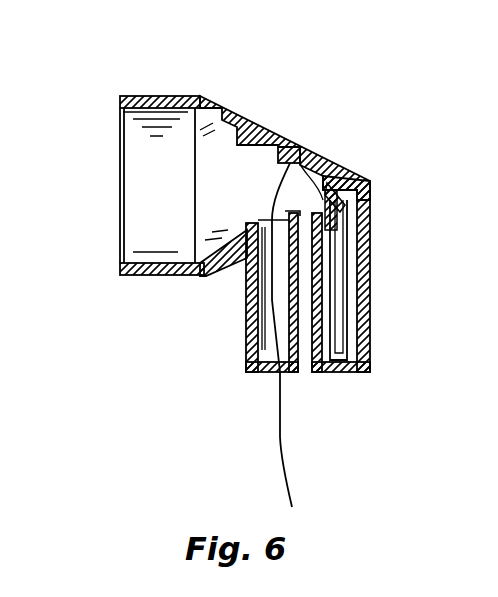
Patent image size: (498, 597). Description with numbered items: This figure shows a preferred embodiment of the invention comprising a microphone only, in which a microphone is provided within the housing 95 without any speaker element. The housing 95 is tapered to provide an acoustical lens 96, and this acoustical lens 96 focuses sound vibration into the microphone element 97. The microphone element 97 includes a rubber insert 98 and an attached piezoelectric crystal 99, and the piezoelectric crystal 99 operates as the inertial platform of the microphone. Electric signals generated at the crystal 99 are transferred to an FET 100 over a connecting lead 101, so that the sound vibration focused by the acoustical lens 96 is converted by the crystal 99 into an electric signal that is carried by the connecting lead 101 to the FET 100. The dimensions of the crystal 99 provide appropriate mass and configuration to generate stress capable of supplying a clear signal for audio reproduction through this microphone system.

The housing 95 is at (148, 96).
The acoustical lens 96 is at (250, 107).
The microphone element 97 is at (353, 173).
The rubber insert 98 is at (370, 199).
The piezoelectric crystal 99 is at (347, 300).
The FET 100 is at (278, 162).
The connecting lead 101 is at (318, 156).